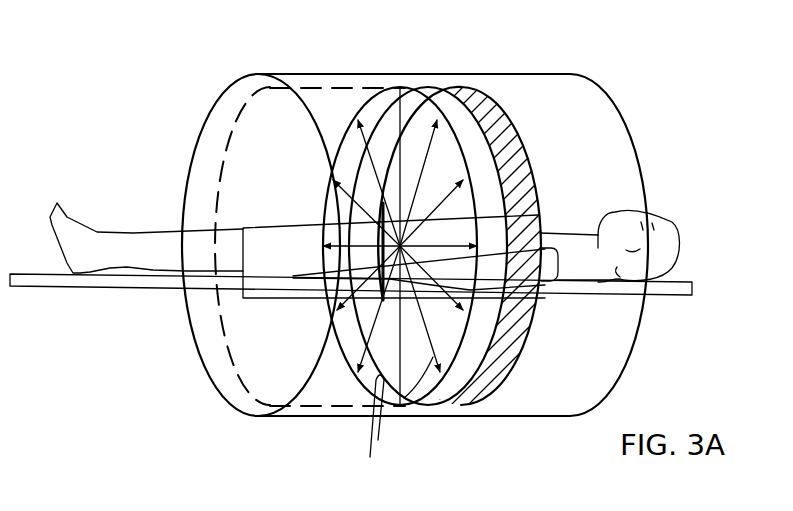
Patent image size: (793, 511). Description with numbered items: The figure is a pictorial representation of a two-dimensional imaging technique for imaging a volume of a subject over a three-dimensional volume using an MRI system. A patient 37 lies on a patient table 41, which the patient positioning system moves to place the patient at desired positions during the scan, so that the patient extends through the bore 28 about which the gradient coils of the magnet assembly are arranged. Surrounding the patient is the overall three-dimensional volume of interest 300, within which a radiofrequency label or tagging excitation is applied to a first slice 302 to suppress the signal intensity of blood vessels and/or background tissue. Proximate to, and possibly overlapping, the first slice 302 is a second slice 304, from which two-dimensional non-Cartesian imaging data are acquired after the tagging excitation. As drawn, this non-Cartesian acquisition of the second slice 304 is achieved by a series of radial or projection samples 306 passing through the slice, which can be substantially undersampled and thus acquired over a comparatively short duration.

The bore 28 is at (229, 127).
The patient 37 is at (673, 242).
The patient table 41 is at (680, 282).
The overall 3D volume of interest 300 is at (262, 396).
The first slice 302 is at (466, 88).
The second slice 304 is at (392, 85).
The radial or projection samples 306 is at (465, 402).